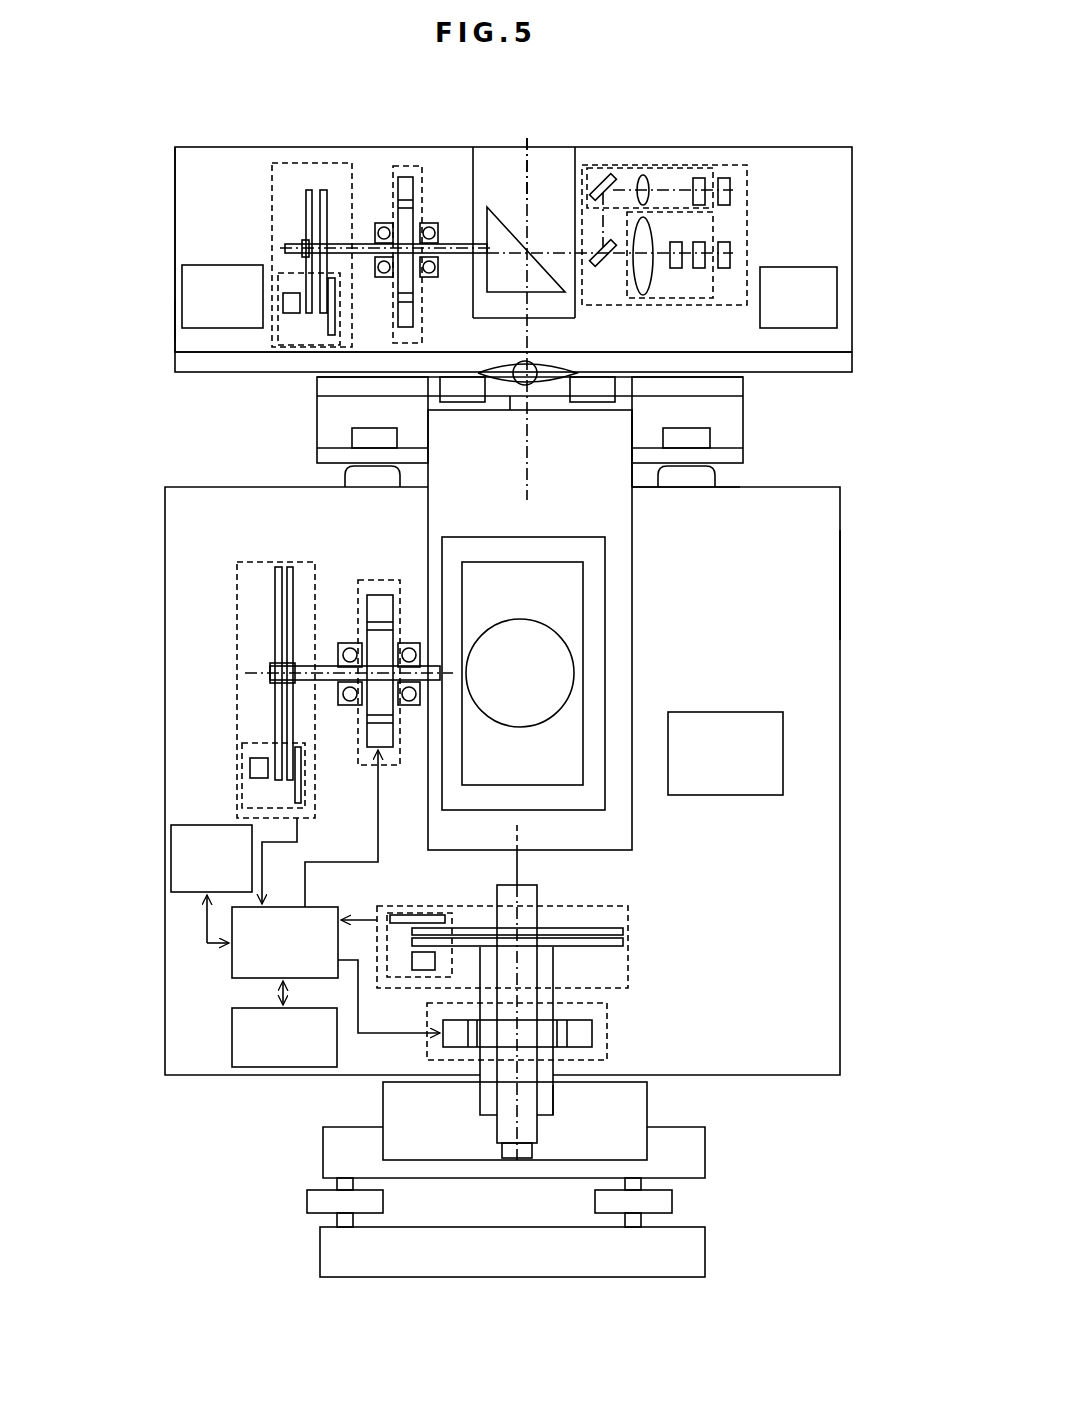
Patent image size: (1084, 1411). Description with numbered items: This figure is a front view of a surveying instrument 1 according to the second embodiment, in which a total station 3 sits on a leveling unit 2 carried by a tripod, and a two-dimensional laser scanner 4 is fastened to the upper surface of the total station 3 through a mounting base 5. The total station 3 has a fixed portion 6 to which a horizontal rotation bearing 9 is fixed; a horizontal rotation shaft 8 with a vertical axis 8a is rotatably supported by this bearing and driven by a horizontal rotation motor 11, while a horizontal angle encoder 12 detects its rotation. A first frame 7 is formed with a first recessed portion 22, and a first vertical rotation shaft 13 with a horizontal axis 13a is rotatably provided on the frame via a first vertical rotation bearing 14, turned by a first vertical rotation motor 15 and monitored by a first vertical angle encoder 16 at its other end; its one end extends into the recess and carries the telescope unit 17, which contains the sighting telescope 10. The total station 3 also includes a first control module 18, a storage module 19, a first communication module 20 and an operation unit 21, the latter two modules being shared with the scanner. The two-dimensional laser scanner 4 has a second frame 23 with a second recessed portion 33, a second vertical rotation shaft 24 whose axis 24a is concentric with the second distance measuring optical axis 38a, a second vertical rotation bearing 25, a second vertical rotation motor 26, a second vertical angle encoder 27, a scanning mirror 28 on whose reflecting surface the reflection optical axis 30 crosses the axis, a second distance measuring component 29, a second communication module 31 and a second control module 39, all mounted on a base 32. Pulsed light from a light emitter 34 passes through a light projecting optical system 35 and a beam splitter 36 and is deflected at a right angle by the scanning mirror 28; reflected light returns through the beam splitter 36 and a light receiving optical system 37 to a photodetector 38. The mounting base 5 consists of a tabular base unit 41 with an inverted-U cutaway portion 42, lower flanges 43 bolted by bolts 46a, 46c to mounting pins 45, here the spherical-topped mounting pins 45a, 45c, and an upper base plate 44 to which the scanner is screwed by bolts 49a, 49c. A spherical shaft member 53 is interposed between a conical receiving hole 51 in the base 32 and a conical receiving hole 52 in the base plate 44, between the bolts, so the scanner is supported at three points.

The surveying instrument 1 is at (146, 146).
The leveling unit 2 is at (705, 1145).
The total station 3 is at (847, 718).
The two-dimensional laser scanner 4 is at (170, 272).
The mounting base 5 is at (314, 419).
The fixed portion 6 is at (647, 1098).
The first frame 7 is at (843, 583).
The horizontal rotation shaft 8 is at (583, 917).
The vertical axis 8a is at (497, 862).
The horizontal rotation bearing 9 is at (553, 1107).
The sighting telescope 10 is at (553, 628).
The horizontal rotation motor 11 is at (607, 1030).
The horizontal angle encoder 12 is at (628, 922).
The first vertical rotation shaft 13 is at (433, 690).
The horizontal axis 13a is at (245, 673).
The first vertical rotation bearing 14 is at (348, 643).
The first vertical rotation motor 15 is at (380, 580).
The first vertical angle encoder 16 is at (250, 562).
The telescope unit 17 is at (560, 536).
The first control module 18 is at (232, 965).
The storage module 19 is at (232, 1040).
The first communication module 20 is at (171, 855).
The operation unit 21 is at (740, 712).
The first recessed portion 22 is at (462, 497).
The second frame 23 is at (175, 318).
The second vertical rotation shaft 24 is at (463, 254).
The axis 24a is at (298, 243).
The second vertical rotation bearing 25 is at (430, 223).
The second vertical rotation motor 26 is at (405, 166).
The second vertical angle encoder 27 is at (300, 163).
The scanning mirror 28 is at (502, 217).
The second distance measuring component 29 is at (672, 166).
The reflection optical axis 30 is at (532, 142).
The second communication module 31 is at (222, 265).
The base 32 is at (852, 352).
The second recessed portion 33 is at (508, 158).
The light emitter 34 is at (733, 188).
The light projecting optical system 35 is at (630, 168).
The beam splitter 36 is at (620, 290).
The light receiving optical system 37 is at (660, 300).
The photodetector 38 is at (733, 250).
The second distance measuring optical axis 38a is at (549, 252).
The second control module 39 is at (832, 268).
The base unit 41 is at (317, 437).
The cutaway portion 42 is at (542, 428).
The flange 43 is at (743, 455).
The base plate 44 is at (743, 386).
The mounting pin 45 is at (682, 492).
The mounting pin 45a is at (345, 478).
The mounting pin 45c is at (730, 490).
The bolt 46a is at (362, 428).
The bolt 46c is at (687, 428).
The bolt 49a is at (456, 402).
The bolt 49c is at (588, 402).
The receiving hole 51 is at (537, 365).
The receiving hole 52 is at (510, 397).
The shaft member 53 is at (505, 365).